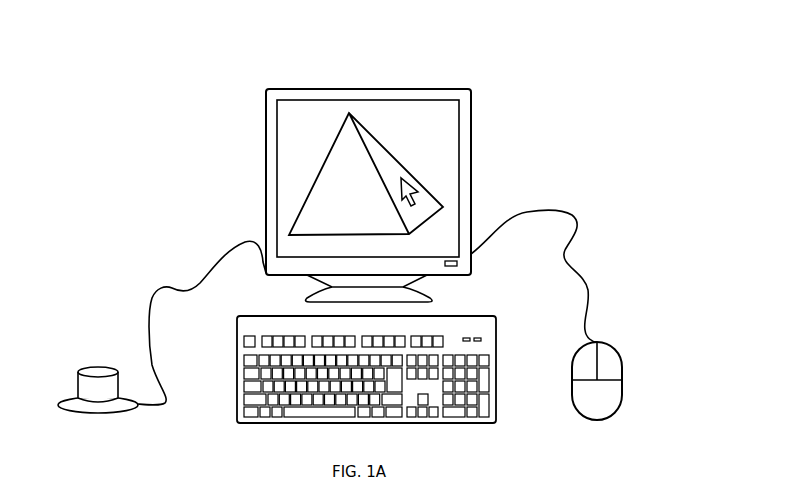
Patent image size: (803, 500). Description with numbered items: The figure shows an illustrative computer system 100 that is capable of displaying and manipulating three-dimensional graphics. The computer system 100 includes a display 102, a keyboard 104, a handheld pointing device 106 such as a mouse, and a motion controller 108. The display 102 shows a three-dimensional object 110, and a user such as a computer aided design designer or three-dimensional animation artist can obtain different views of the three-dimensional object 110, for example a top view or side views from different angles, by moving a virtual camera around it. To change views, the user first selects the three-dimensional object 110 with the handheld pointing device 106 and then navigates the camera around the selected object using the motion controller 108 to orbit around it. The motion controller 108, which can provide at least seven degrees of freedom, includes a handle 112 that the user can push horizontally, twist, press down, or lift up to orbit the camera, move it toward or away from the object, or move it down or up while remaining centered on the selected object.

The computer system 100 is at (90, 47).
The display 102 is at (367, 89).
The keyboard 104 is at (496, 420).
The handheld pointing device 106 is at (622, 376).
The motion controller 108 is at (60, 403).
The 3D object 110 is at (293, 225).
The handle 112 is at (120, 365).